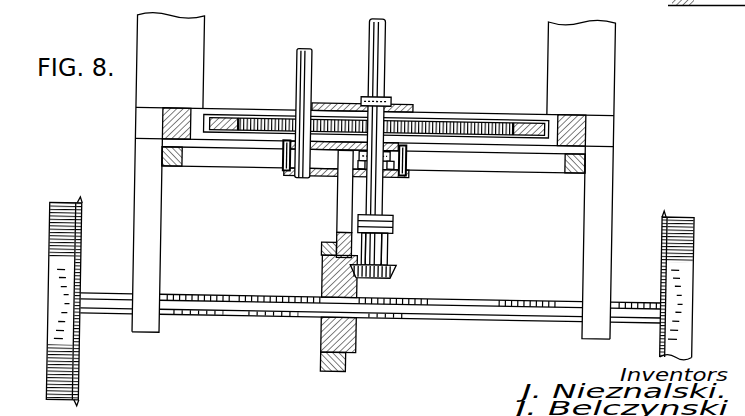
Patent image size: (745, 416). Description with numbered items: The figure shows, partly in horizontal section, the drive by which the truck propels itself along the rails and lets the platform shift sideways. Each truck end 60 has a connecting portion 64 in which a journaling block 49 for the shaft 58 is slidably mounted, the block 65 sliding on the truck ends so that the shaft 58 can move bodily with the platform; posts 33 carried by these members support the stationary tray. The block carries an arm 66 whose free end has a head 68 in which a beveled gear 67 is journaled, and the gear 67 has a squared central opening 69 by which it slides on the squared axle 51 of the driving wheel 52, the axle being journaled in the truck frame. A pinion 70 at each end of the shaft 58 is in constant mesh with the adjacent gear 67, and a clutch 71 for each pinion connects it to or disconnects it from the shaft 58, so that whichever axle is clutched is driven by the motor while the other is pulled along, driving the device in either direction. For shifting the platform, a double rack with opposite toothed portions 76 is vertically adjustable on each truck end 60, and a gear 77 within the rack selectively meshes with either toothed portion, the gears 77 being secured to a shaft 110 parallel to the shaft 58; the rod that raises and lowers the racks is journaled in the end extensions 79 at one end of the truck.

The post 33 is at (159, 124).
The truck end 60 is at (198, 139).
The gear 77 is at (288, 112).
The connecting portion 64 is at (252, 135).
The shaft 110 is at (310, 76).
The shaft 58 is at (382, 43).
The block 65 is at (393, 100).
The toothed portion 76 is at (474, 122).
The journaling block 49 is at (389, 176).
The arm 66 is at (337, 196).
The clutch 71 is at (393, 218).
The pinion 70 is at (394, 267).
The squared central opening 69 is at (360, 287).
The beveled gear 67 is at (361, 332).
The head 68 is at (333, 373).
The end extension 79 is at (374, 176).
The axle 51 is at (493, 317).
The wheel 52 is at (694, 318).